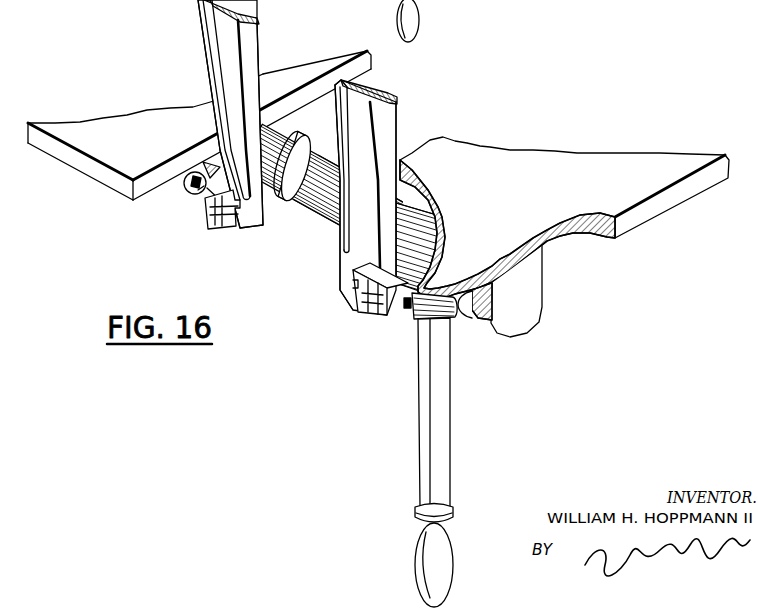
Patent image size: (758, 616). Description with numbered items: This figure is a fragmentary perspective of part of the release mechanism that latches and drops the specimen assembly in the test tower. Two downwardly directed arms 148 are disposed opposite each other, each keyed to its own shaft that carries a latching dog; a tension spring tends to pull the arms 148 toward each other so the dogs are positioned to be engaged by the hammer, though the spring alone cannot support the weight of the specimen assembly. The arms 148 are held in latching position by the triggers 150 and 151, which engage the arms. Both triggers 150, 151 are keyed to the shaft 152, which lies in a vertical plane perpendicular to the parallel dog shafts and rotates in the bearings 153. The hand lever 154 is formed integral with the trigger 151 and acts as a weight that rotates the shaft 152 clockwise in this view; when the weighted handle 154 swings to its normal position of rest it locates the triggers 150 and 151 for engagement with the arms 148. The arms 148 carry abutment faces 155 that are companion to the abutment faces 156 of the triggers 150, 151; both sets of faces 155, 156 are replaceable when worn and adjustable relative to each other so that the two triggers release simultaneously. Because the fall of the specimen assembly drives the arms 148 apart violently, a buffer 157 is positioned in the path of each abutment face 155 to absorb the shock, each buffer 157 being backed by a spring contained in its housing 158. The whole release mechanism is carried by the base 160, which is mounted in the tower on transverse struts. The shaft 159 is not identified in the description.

The arms 148 is at (336, 88).
The trigger 150 is at (208, 210).
The trigger 151 is at (380, 309).
The shaft 152 is at (390, 172).
The bearings 153 is at (533, 293).
The hand lever 154 is at (425, 443).
The abutment faces 155 is at (231, 230).
The abutment faces 156 is at (220, 223).
The buffer 157 is at (200, 192).
The housing 158 is at (187, 190).
The shaft 159 is at (342, 211).
The base 160 is at (123, 148).